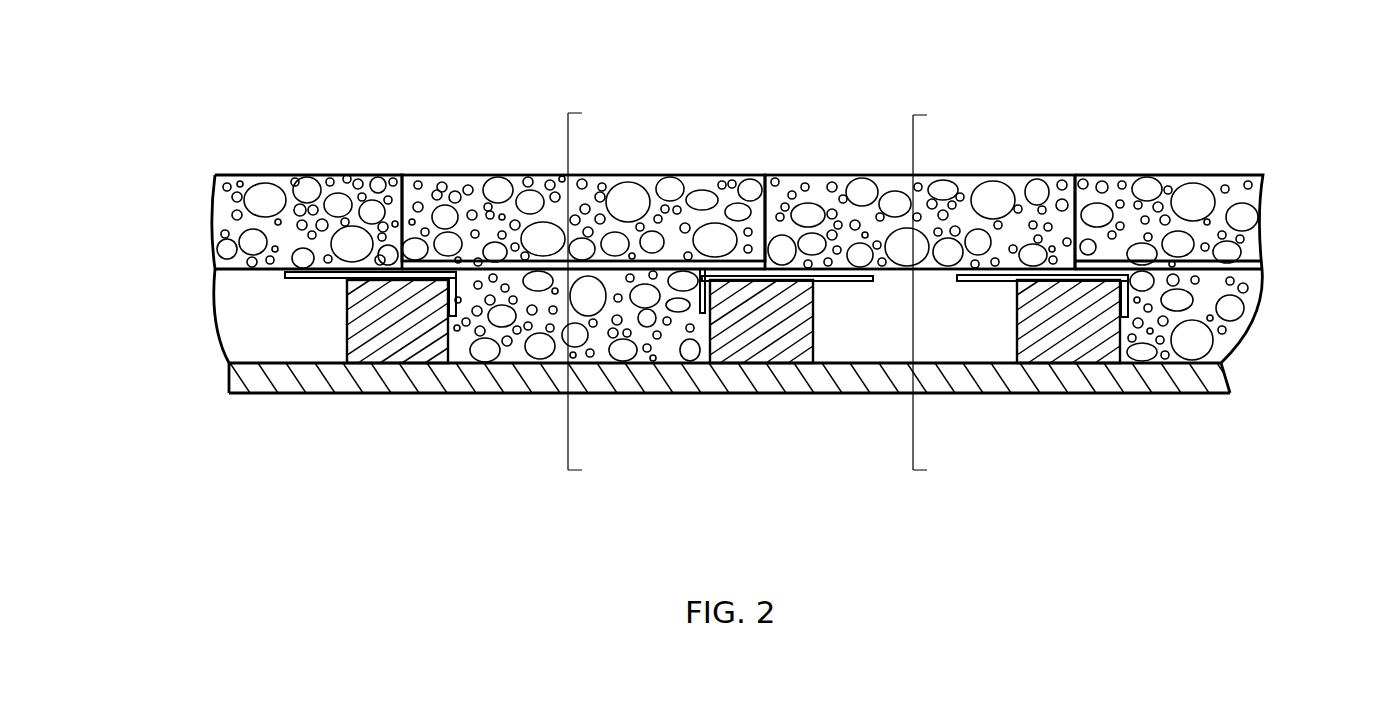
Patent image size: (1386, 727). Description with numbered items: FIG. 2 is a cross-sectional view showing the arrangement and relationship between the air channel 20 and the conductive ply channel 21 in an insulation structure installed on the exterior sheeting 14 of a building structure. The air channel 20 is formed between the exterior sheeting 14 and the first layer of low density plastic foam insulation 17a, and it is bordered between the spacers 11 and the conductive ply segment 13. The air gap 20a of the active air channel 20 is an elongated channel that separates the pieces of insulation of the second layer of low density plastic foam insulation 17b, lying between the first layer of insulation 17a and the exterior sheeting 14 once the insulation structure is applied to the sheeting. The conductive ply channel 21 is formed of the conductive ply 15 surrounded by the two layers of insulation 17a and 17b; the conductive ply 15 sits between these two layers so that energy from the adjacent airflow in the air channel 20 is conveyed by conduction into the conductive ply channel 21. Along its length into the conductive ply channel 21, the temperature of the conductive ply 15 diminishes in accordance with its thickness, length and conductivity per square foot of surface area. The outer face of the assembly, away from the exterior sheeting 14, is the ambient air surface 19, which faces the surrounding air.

The spacer 11 is at (387, 352).
The conductive ply segment 13 is at (325, 278).
The exterior sheeting 14 is at (712, 395).
The conductive ply 15 is at (670, 258).
The first layer low density plastic foam insulation 17a is at (445, 175).
The second layer low density plastic foam insulation 17b is at (615, 277).
The ambient air surface 19 is at (1148, 175).
The air channel 20 is at (939, 291).
The air gap 20a is at (967, 337).
The conductive ply channel 21 is at (594, 291).